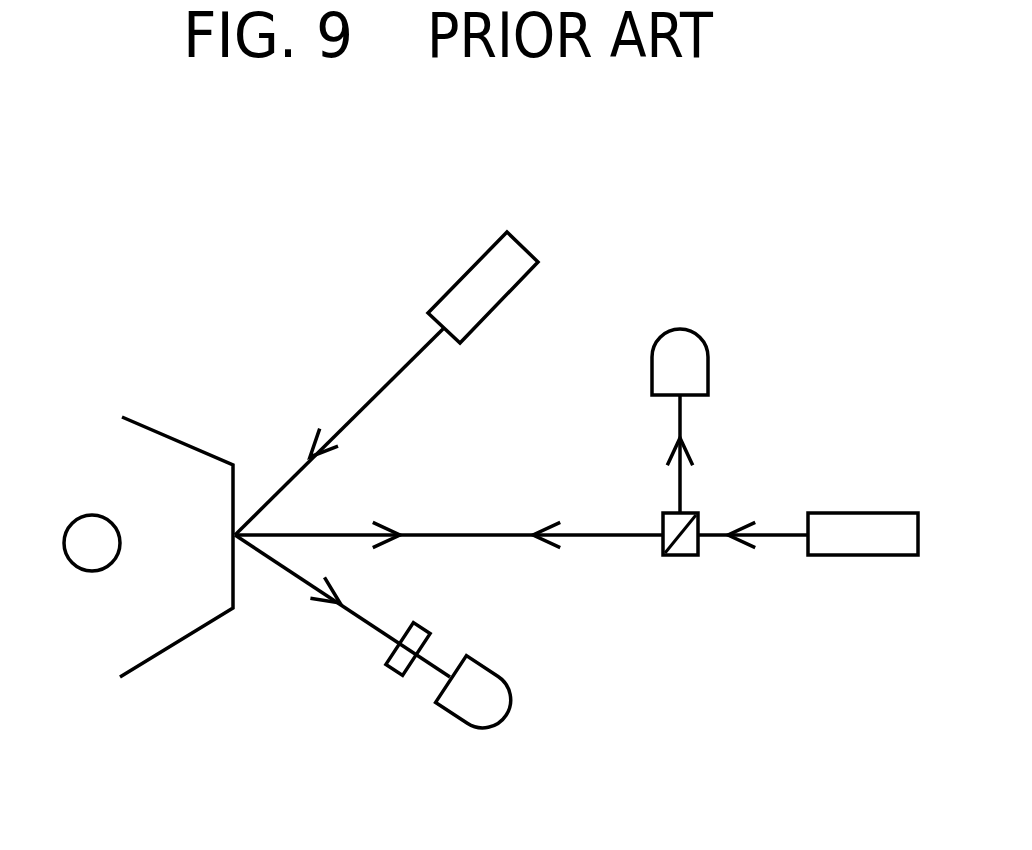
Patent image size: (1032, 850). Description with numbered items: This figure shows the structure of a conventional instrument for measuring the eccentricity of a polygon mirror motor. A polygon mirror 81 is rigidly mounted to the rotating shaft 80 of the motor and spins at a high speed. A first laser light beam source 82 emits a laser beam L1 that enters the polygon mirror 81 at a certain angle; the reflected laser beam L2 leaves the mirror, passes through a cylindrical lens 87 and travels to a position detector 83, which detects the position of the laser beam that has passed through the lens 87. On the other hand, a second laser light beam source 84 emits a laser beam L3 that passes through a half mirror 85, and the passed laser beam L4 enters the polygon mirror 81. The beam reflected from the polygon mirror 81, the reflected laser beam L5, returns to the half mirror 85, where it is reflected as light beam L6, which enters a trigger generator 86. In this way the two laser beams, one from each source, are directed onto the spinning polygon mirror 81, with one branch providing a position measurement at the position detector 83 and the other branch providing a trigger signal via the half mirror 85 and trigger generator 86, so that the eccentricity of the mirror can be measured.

The rotating shaft 80 is at (72, 537).
The polygon mirror 81 is at (165, 460).
The first laser light beam source 82 is at (448, 290).
The position detector 83 is at (487, 713).
The second laser light beam source 84 is at (885, 520).
The half mirror 85 is at (688, 555).
The trigger generator 86 is at (710, 365).
The cylindrical lens 87 is at (397, 663).
The laser beam L1 is at (378, 388).
The reflected laser beam L2 is at (285, 575).
The laser beam L3 is at (782, 535).
The passed laser beam L4 is at (593, 535).
The reflected laser beam L5 is at (338, 535).
The reflected light beam L6 is at (682, 485).